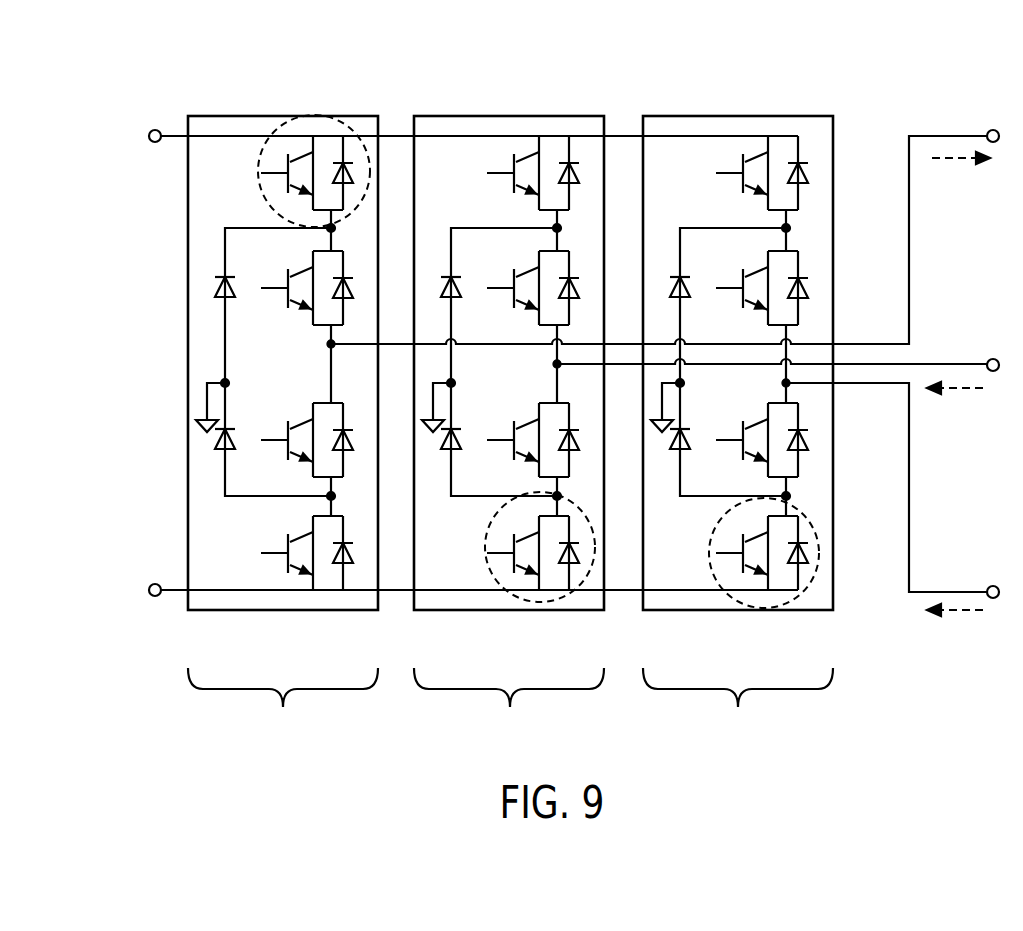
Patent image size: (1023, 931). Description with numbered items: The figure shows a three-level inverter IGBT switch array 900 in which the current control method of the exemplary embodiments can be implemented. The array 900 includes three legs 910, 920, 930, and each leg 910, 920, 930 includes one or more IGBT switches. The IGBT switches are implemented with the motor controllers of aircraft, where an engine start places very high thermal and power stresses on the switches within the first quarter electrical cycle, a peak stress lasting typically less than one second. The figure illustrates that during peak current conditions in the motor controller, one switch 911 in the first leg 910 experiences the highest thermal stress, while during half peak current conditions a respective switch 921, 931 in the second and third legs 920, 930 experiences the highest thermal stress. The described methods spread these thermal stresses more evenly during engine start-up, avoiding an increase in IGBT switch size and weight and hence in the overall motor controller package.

The three-level inverter IGBT switch array 900 is at (169, 52).
The first leg 910 is at (283, 400).
The switch 911 is at (262, 187).
The second leg 920 is at (509, 430).
The switch 921 is at (487, 566).
The third leg 930 is at (738, 430).
The switch 931 is at (716, 582).